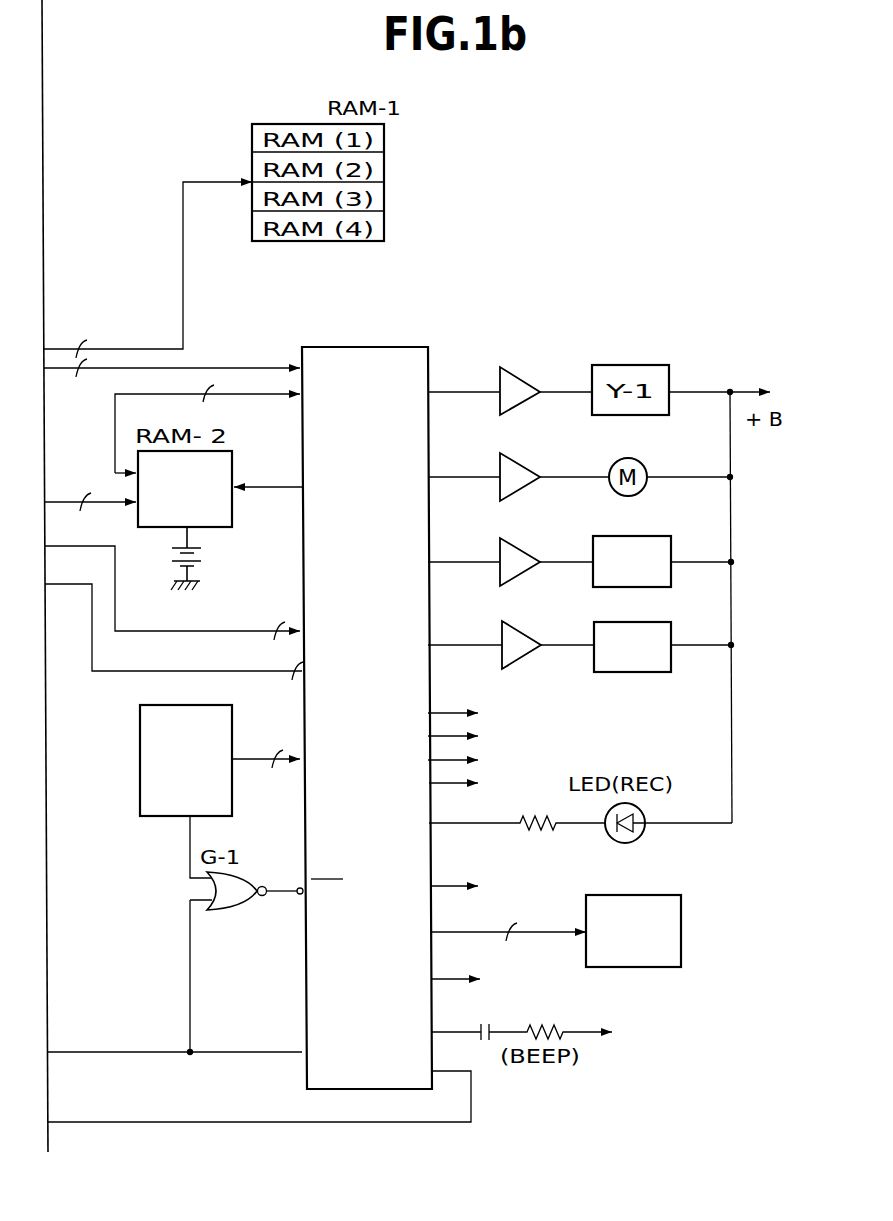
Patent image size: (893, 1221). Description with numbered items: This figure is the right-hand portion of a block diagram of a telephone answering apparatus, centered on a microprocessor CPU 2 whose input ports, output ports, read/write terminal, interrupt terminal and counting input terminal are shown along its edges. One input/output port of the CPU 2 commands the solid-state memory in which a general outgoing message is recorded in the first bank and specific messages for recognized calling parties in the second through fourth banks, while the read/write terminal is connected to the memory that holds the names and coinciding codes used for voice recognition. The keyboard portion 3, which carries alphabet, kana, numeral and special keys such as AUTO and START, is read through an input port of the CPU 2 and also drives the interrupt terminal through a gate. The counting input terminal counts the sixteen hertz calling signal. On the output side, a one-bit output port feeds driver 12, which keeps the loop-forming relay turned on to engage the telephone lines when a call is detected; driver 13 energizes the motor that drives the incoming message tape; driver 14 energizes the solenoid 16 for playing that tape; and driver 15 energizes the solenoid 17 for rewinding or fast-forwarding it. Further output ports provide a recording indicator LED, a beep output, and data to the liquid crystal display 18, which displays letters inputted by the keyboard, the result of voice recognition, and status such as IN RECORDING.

The microprocessor CPU 2 is at (325, 1089).
The keyboard portion 3 is at (140, 730).
The driver 12 is at (527, 381).
The driver 13 is at (530, 467).
The driver 14 is at (525, 553).
The driver 15 is at (529, 629).
The solenoid for playing 16 is at (593, 536).
The solenoid for rewinding or fast-forwarding 17 is at (593, 672).
The liquid crystal display 18 is at (600, 895).